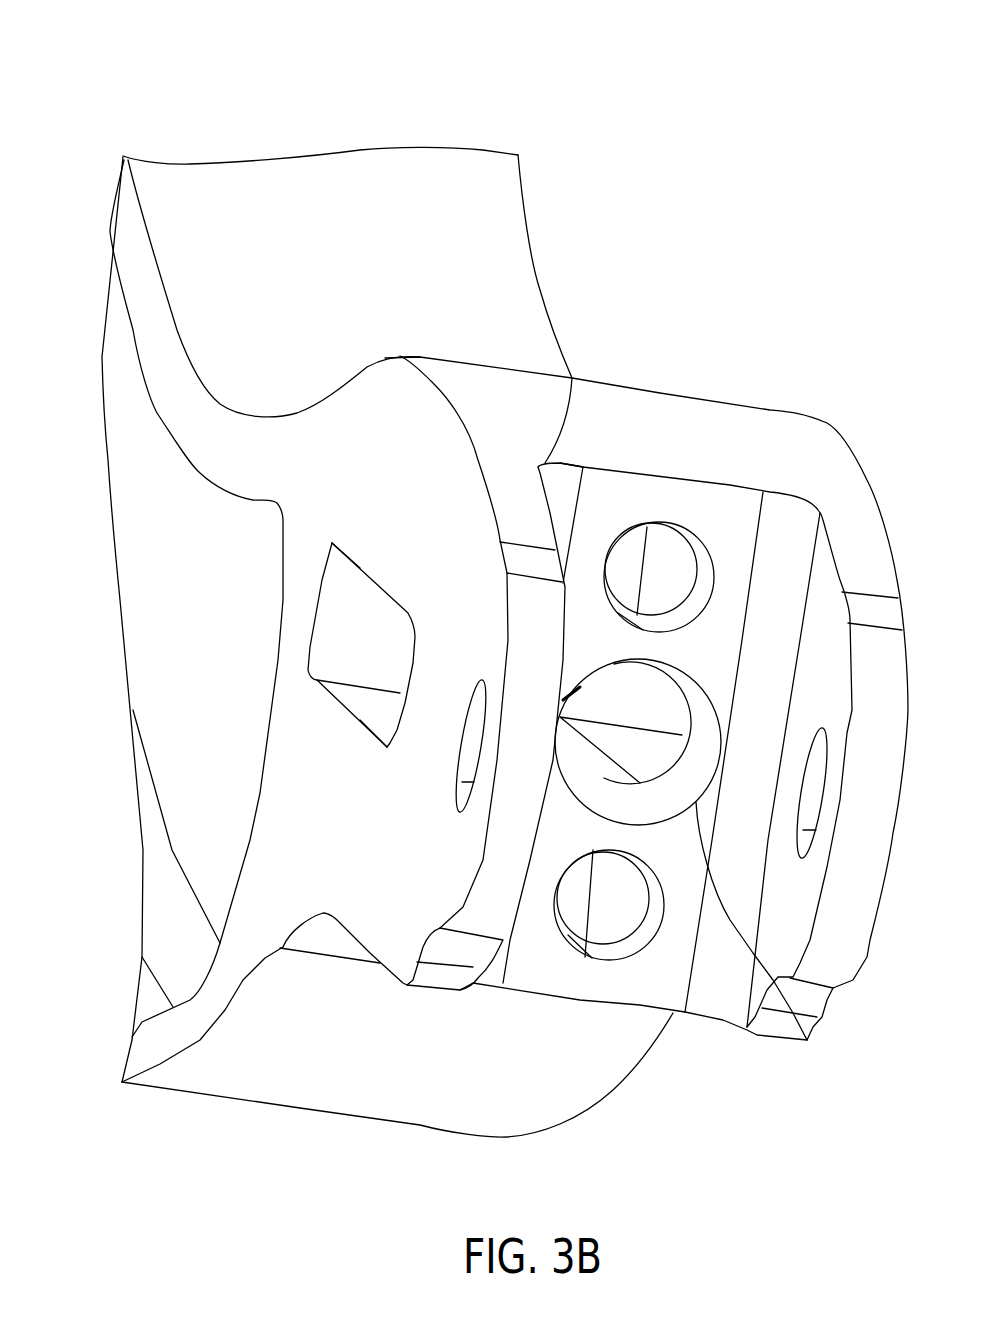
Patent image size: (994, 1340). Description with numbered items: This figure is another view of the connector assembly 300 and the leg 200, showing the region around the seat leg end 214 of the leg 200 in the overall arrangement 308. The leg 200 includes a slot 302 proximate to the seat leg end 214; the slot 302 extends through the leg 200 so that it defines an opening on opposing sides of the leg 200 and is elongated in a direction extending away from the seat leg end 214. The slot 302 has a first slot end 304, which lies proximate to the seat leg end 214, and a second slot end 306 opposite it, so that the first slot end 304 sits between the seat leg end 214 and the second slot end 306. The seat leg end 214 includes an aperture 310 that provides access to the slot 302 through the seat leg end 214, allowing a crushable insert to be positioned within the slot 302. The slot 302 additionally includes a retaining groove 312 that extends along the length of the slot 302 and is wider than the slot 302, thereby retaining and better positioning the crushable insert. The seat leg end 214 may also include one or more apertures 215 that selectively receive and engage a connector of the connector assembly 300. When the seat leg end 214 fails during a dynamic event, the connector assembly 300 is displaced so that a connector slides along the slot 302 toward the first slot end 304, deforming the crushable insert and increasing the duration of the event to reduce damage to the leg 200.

The tool assembly 308 is at (278, 87).
The leg 200 is at (210, 177).
The connector assembly 300 is at (305, 1028).
The slot 302 is at (347, 595).
The first slot end 304 is at (390, 735).
The second slot end 306 is at (333, 580).
The aperture 310 is at (807, 1040).
The retaining groove 312 is at (597, 765).
The seat leg end 214 is at (610, 507).
The apertures 215 is at (703, 567).